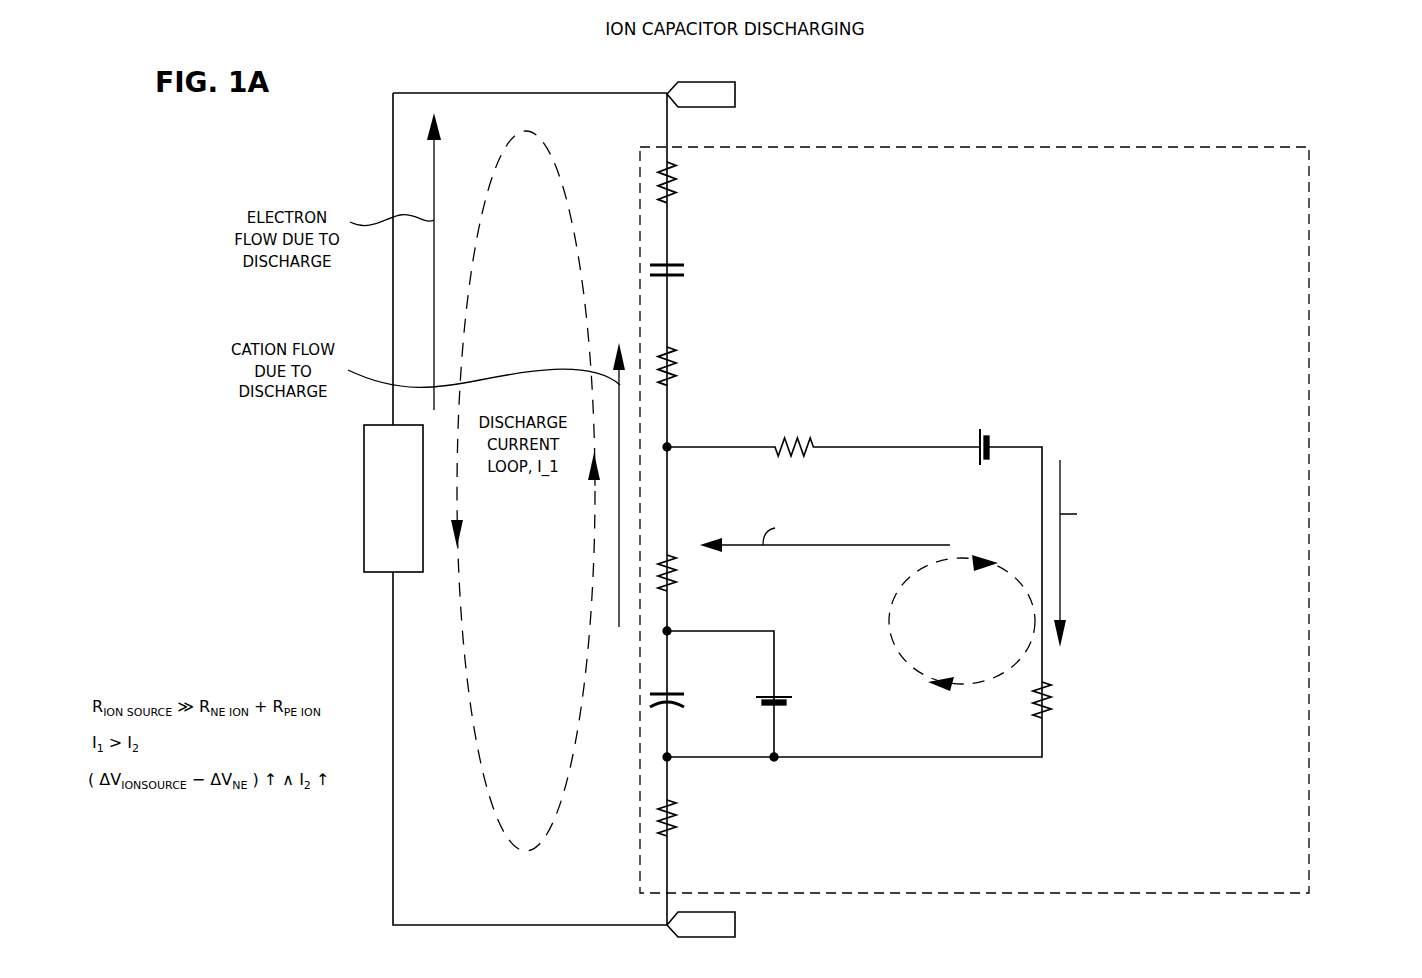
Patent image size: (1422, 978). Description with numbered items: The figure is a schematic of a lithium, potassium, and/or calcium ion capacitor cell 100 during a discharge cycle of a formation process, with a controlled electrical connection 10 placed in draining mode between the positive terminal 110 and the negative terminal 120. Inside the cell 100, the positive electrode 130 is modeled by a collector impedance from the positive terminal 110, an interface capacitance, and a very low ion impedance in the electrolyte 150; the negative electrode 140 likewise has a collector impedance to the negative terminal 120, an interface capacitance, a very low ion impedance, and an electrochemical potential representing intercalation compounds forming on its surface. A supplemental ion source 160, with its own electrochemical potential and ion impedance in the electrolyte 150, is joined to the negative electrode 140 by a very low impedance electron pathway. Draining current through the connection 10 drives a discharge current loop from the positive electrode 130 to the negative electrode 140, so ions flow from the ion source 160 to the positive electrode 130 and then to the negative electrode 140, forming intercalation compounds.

The controlled electrical connection 10 is at (364, 518).
The capacitor cell 100 is at (1086, 147).
The positive terminal 110 is at (667, 143).
The negative terminal 120 is at (667, 897).
The positive electrode 130 is at (905, 236).
The negative electrode 140 is at (905, 797).
The electrolyte 150 is at (1159, 350).
The supplemental ion source 160 is at (1134, 444).